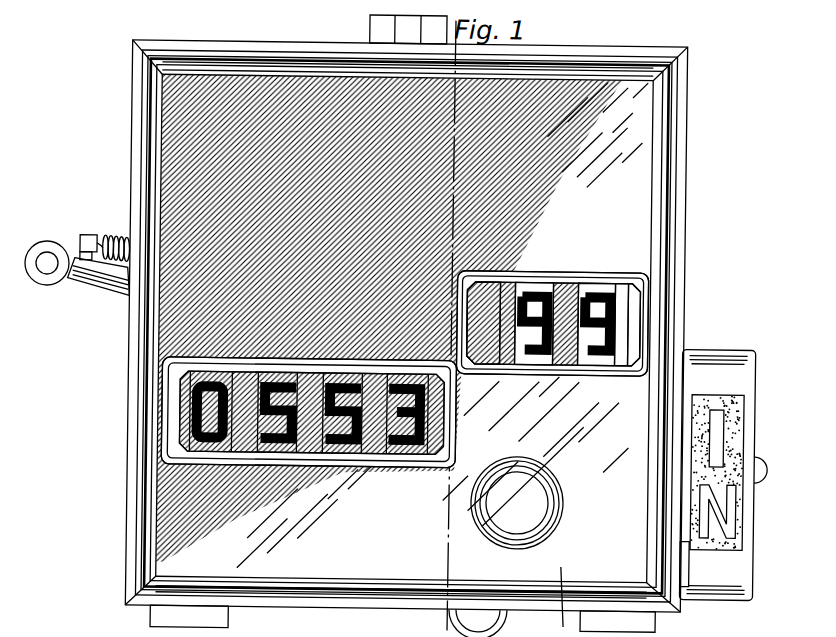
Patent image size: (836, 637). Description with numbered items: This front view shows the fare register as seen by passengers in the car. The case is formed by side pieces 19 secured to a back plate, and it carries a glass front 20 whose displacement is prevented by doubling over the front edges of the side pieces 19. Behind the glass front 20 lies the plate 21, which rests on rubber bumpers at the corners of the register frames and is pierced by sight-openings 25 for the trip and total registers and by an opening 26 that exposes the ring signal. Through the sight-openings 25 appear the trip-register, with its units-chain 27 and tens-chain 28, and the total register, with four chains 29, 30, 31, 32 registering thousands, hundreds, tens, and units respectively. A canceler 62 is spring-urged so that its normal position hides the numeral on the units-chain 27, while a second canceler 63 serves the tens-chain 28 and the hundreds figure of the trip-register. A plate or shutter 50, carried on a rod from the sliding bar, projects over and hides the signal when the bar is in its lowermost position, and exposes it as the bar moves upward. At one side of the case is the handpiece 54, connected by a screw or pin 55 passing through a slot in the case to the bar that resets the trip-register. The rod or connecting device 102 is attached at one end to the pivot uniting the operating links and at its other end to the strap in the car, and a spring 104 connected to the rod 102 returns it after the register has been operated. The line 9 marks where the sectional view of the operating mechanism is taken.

The section line 9 is at (450, 323).
The side pieces 19 is at (256, 59).
The glass front 20 is at (173, 555).
The plate 21 is at (557, 602).
The sight-openings 25 is at (608, 281).
The opening 26 is at (547, 508).
The units-chain 27 is at (591, 288).
The tens-chain 28 is at (527, 288).
The thousands chain 29 is at (215, 454).
The hundreds chain 30 is at (290, 448).
The tens chain 31 is at (348, 444).
The units chain 32 is at (414, 455).
The plate or shutter 50 is at (532, 493).
The handpiece 54 is at (736, 382).
The screw or pin 55 is at (762, 467).
The canceler 62 is at (633, 313).
The canceler 63 is at (484, 323).
The rod or connecting device 102 is at (99, 291).
The spring 104 is at (114, 237).